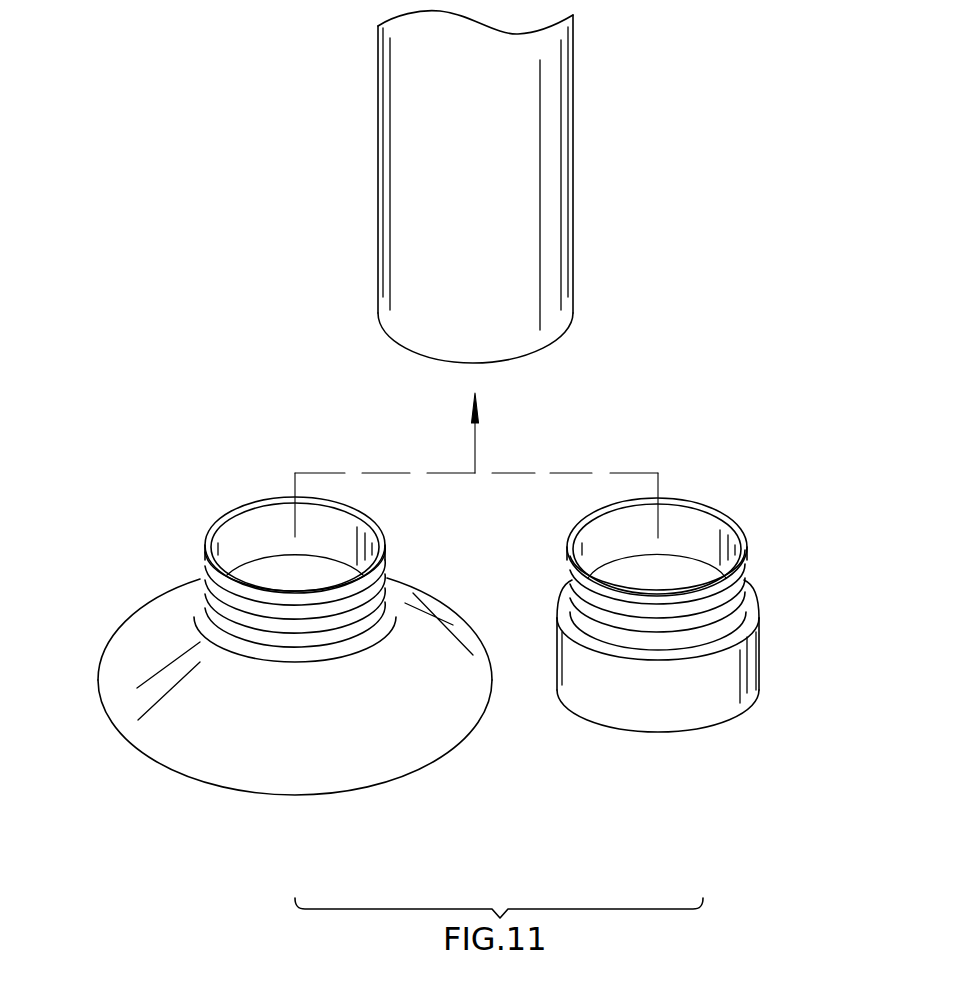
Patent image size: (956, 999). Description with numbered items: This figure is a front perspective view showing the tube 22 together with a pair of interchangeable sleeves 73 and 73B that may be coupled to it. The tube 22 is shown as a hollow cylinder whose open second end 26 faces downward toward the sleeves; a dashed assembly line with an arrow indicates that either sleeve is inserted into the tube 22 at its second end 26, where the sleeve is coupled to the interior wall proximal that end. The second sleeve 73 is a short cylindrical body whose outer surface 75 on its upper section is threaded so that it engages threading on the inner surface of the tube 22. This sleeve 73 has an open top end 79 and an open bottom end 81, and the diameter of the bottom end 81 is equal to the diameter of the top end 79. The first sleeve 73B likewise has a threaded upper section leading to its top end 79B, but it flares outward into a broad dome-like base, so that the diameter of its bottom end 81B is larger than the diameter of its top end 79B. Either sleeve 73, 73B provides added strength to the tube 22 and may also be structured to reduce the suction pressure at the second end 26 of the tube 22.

The tube 22 is at (368, 98).
The second end 26 is at (378, 312).
The sleeve 73 is at (743, 672).
The sleeve 73B is at (160, 643).
The outer surface 75 is at (748, 576).
The open top end 79 is at (697, 500).
The top end 79B is at (257, 503).
The open bottom end 81 is at (655, 733).
The bottom end 81B is at (277, 795).